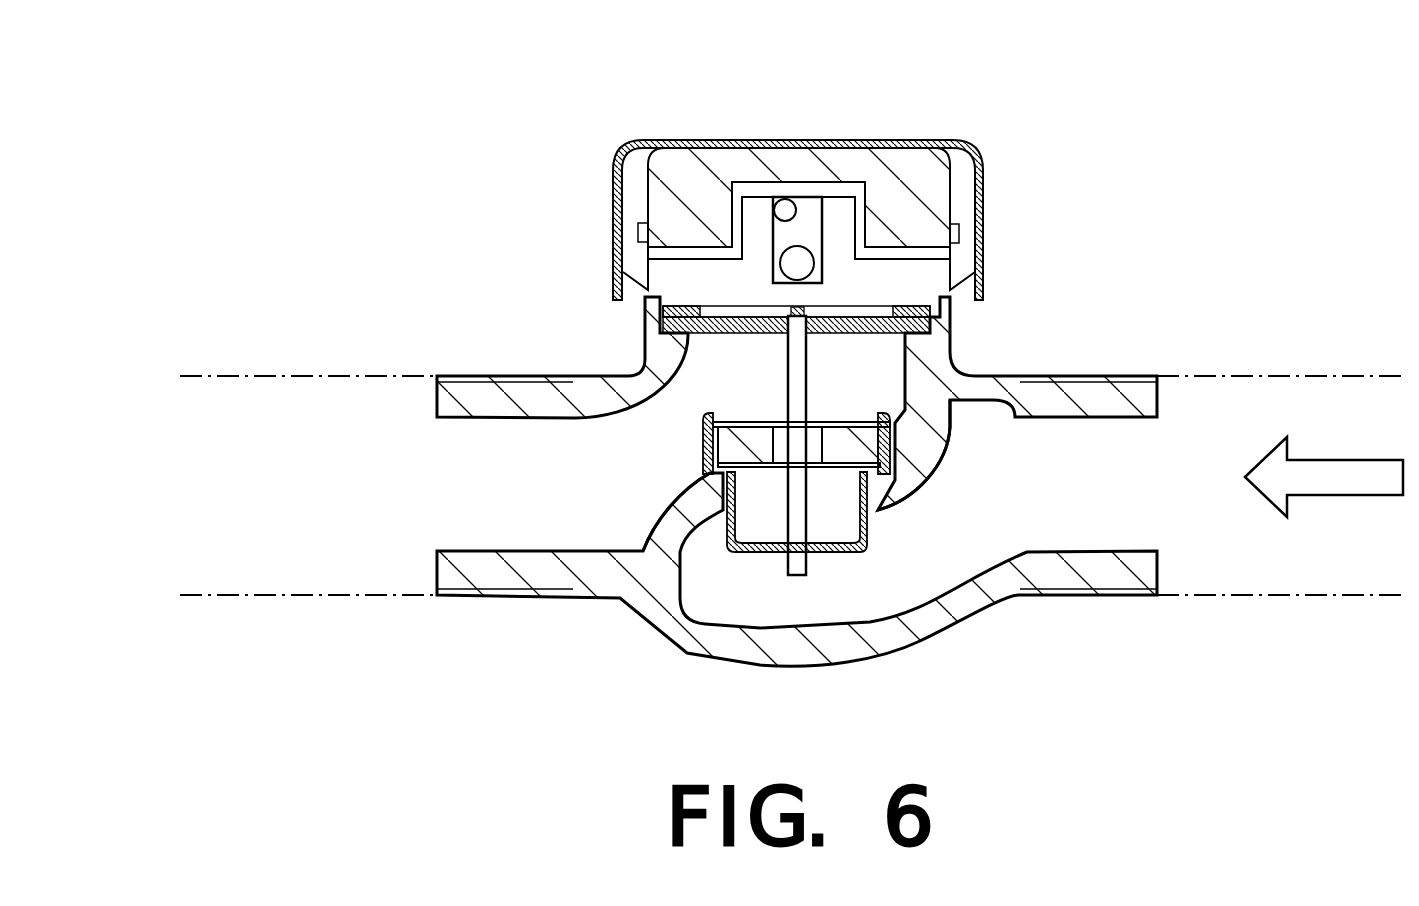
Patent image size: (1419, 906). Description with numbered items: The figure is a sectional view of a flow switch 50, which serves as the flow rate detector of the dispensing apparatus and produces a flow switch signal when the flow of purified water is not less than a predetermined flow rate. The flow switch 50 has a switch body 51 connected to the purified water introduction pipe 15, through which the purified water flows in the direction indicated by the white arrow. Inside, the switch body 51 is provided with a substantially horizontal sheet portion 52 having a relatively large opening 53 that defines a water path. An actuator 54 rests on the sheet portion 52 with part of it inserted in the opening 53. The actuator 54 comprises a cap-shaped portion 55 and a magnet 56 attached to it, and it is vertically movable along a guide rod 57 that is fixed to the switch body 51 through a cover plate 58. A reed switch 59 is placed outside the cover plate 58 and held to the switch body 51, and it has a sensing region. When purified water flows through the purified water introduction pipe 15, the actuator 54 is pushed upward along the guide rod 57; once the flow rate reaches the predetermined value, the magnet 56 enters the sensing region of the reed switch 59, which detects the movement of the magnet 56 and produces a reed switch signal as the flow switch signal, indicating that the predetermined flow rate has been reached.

The purified water introduction pipe 15 is at (1213, 372).
The flow switch 50 is at (1015, 307).
The switch body 51 is at (947, 627).
The sheet portion 52 is at (697, 503).
The opening 53 is at (717, 523).
The actuator 54 is at (880, 531).
The cap-shaped portion 55 is at (695, 425).
The magnet 56 is at (747, 437).
The guide rod 57 is at (800, 390).
The cover plate 58 is at (905, 346).
The reed switch 59 is at (807, 230).